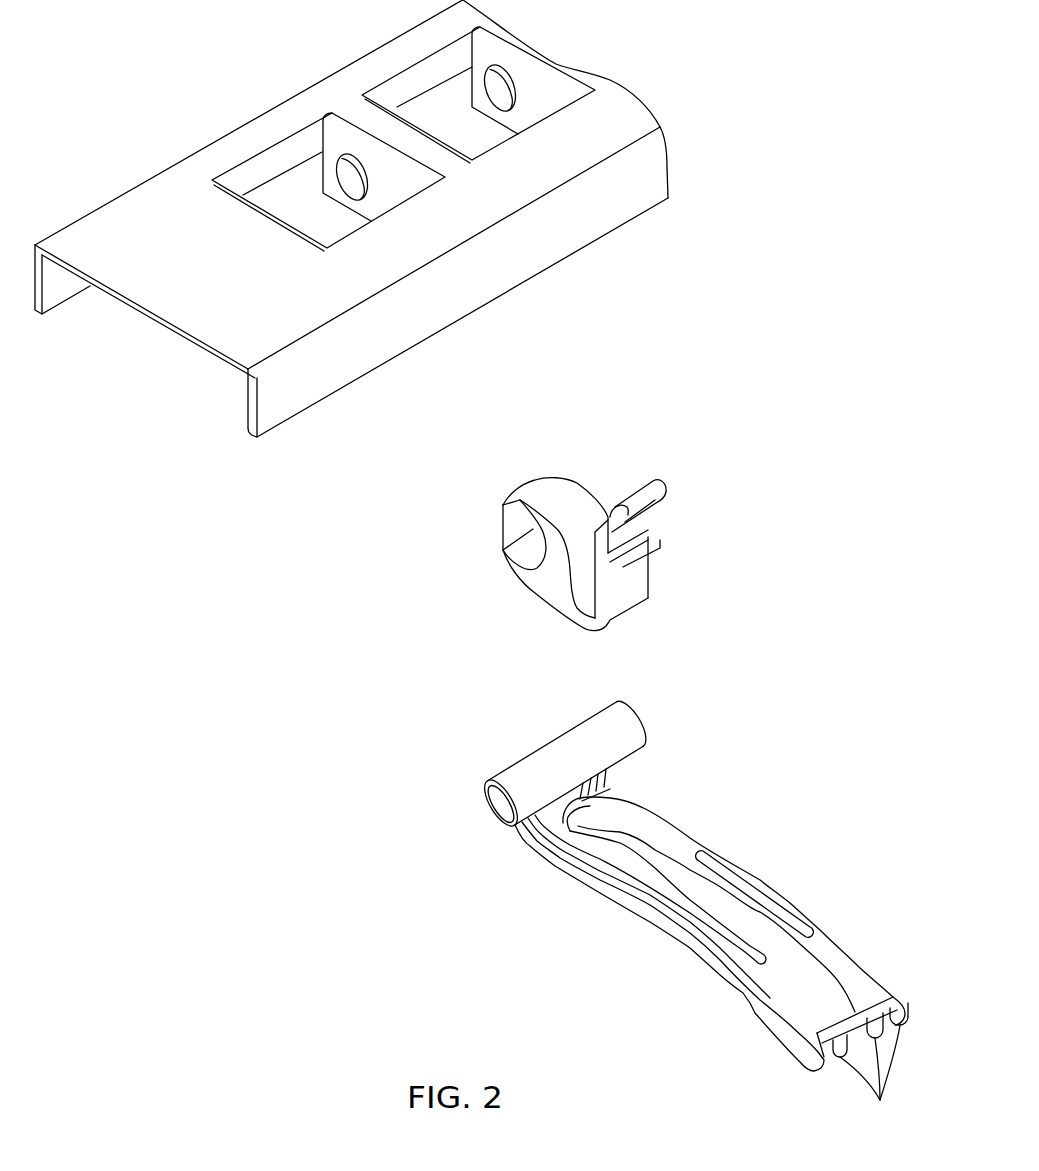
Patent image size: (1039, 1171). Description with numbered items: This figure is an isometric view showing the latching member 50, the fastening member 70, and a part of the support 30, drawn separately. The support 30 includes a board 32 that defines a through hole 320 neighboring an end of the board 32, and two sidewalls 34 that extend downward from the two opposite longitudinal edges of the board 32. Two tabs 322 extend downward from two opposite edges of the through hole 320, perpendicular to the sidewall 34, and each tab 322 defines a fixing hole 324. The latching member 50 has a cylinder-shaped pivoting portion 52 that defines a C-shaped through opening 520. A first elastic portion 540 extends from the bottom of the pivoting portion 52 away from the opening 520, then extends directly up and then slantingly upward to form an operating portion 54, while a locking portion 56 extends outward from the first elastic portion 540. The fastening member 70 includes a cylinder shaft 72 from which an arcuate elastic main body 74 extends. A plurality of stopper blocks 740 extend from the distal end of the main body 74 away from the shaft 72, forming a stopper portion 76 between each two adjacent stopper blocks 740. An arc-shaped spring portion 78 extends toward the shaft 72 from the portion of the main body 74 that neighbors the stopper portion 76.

The support 30 is at (328, 50).
The board 32 is at (163, 212).
The sidewall 34 is at (582, 205).
The through hole 320 is at (280, 193).
The tab 322 is at (390, 183).
The fixing hole 324 is at (347, 168).
The latching member 50 is at (592, 462).
The pivoting portion 52 is at (533, 573).
The through opening 520 is at (515, 533).
The operating portion 54 is at (643, 500).
The locking portion 56 is at (637, 553).
The first elastic portion 540 is at (605, 573).
The fastening member 70 is at (797, 835).
The shaft 72 is at (537, 777).
The main body 74 is at (670, 908).
The spring portion 78 is at (648, 832).
The stopper portion 76 is at (860, 1043).
The stopper block 740 is at (880, 1100).